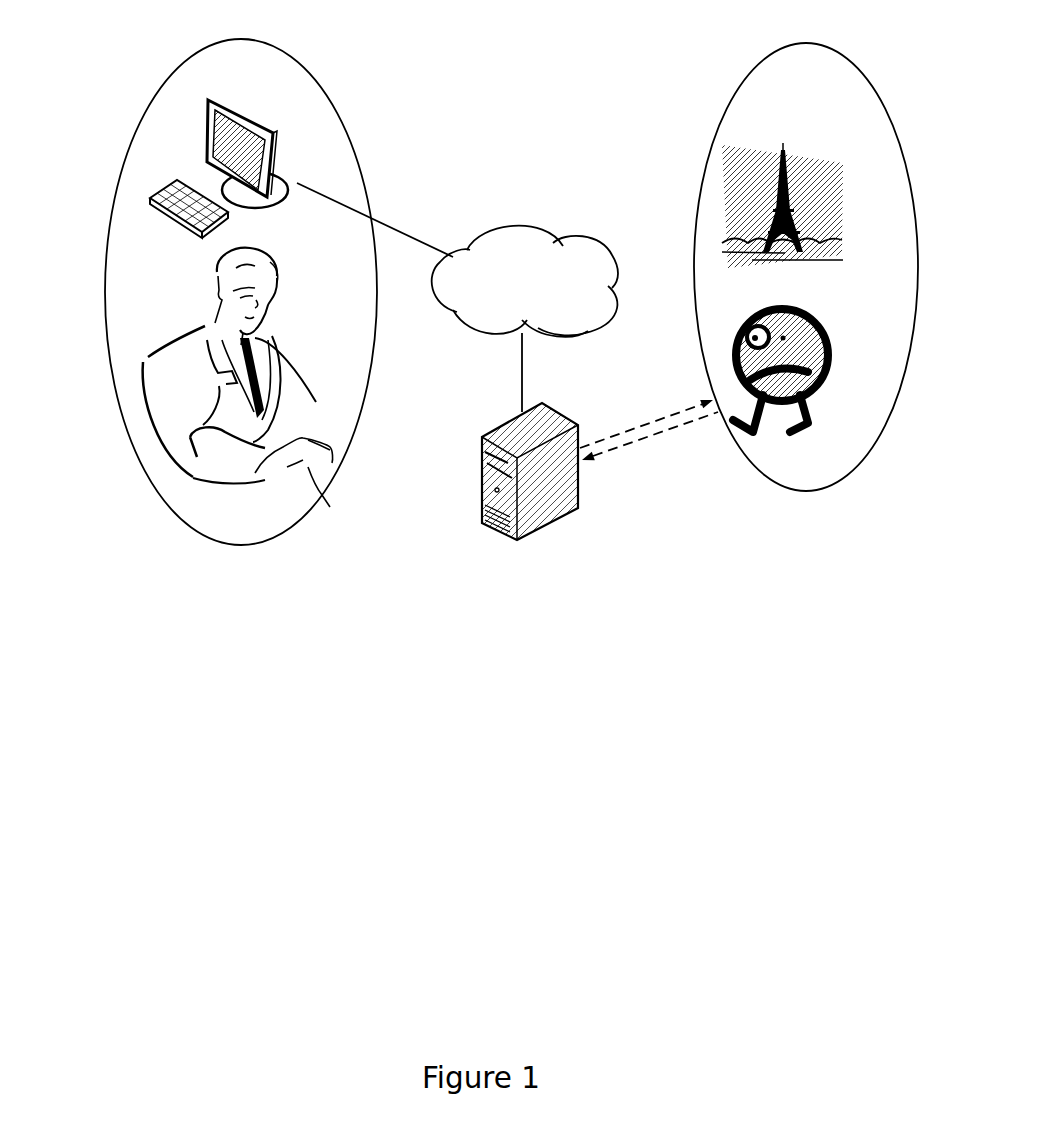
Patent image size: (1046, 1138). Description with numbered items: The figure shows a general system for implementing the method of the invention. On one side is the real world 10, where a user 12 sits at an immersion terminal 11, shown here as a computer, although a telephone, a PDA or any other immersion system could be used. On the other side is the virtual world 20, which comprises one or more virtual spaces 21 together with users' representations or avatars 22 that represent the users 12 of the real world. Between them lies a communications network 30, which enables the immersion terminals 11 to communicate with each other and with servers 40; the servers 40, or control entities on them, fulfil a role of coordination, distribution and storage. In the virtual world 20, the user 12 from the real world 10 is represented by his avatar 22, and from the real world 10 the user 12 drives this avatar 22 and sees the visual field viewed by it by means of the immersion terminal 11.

The real world 10 is at (352, 140).
The immersion terminal 11 is at (207, 156).
The user 12 is at (320, 495).
The virtual world 20 is at (704, 163).
The virtual space 21 is at (843, 223).
The avatar 22 is at (828, 341).
The communications network 30 is at (523, 224).
The server 40 is at (545, 517).